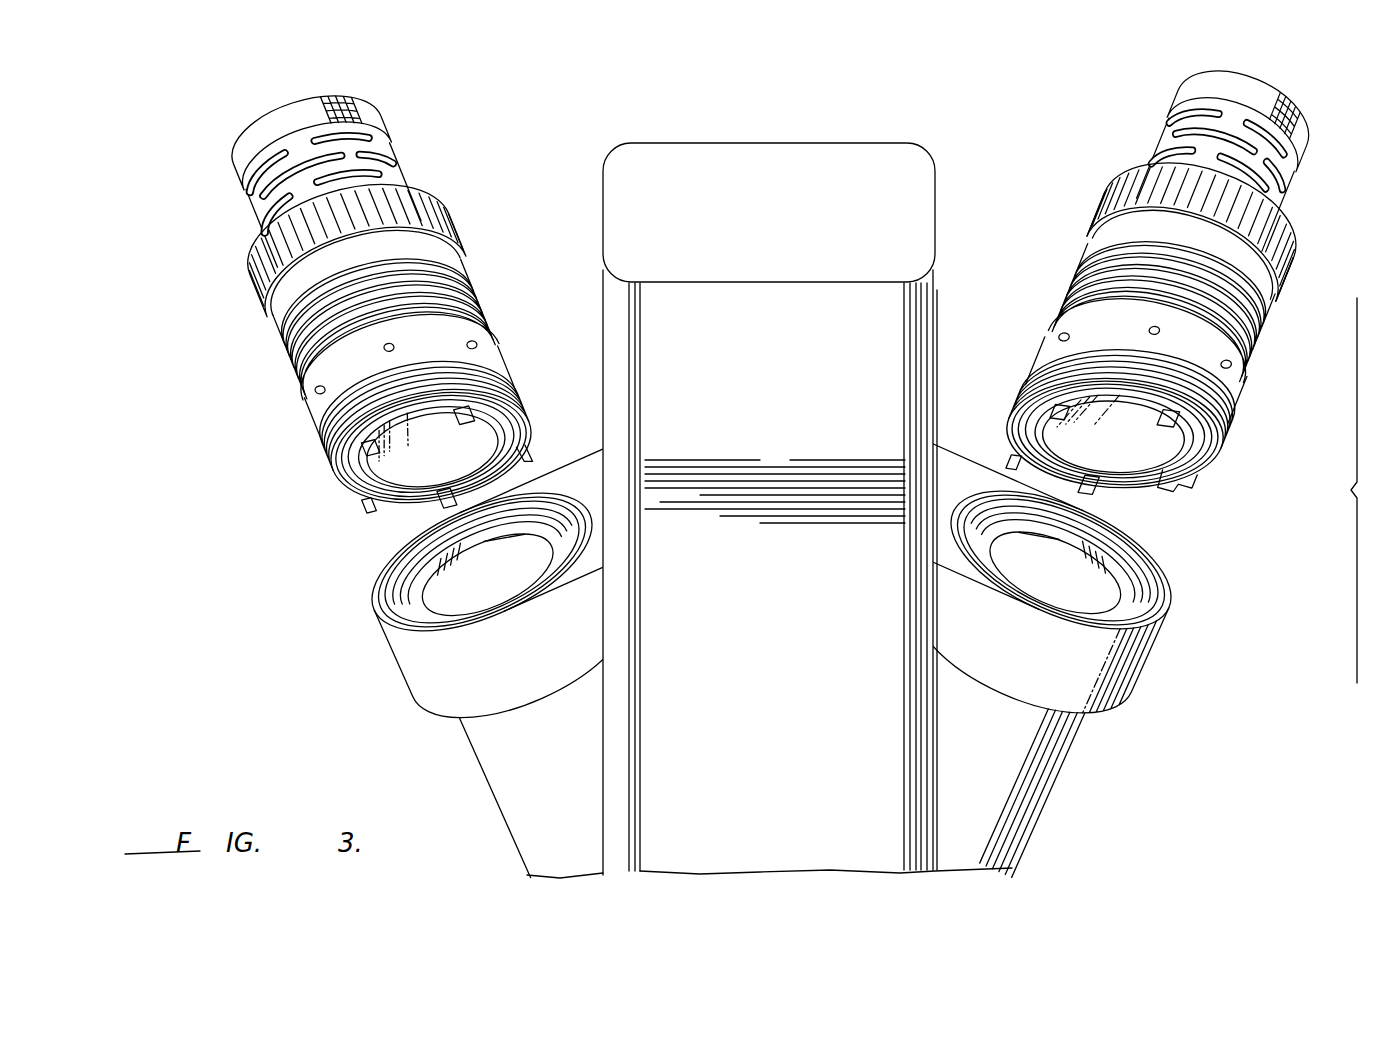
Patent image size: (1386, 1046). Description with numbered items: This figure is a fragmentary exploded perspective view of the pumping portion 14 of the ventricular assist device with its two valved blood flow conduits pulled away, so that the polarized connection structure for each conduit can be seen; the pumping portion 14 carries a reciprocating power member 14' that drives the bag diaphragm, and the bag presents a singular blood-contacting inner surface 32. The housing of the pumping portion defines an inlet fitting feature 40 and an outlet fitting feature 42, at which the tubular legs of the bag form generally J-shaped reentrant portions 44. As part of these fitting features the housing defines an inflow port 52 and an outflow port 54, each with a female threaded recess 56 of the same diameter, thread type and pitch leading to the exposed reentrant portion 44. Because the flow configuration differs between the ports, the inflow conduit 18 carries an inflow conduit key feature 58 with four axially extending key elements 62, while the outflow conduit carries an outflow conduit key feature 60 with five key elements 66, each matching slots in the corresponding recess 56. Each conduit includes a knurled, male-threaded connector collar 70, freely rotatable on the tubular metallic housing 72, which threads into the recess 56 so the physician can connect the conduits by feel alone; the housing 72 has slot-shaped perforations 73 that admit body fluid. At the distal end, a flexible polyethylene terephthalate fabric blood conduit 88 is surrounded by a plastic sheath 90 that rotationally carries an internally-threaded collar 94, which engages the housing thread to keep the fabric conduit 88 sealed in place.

The pumping portion 14 is at (768, 788).
The power member 14' is at (770, 509).
The inflow conduit 18 is at (1052, 251).
The blood-contacting inner surface 32 is at (1082, 608).
The inlet fitting feature 40 is at (1200, 576).
The outlet fitting feature 42 is at (360, 608).
The reentrant portion 44 is at (402, 629).
The inflow port 52 is at (1030, 604).
The outflow port 54 is at (522, 598).
The female threaded recess 56 is at (418, 569).
The inflow conduit key feature 58 is at (1212, 484).
The outflow conduit key feature 60 is at (533, 409).
The key element 62 is at (1182, 522).
The key element 66 is at (370, 522).
The connector collar 70 is at (310, 426).
The tubular metallic housing 72 is at (452, 294).
The perforation 73 is at (292, 356).
The fabric blood conduit 88 is at (352, 120).
The plastic sheath 90 is at (392, 169).
The internally-threaded collar 94 is at (440, 231).